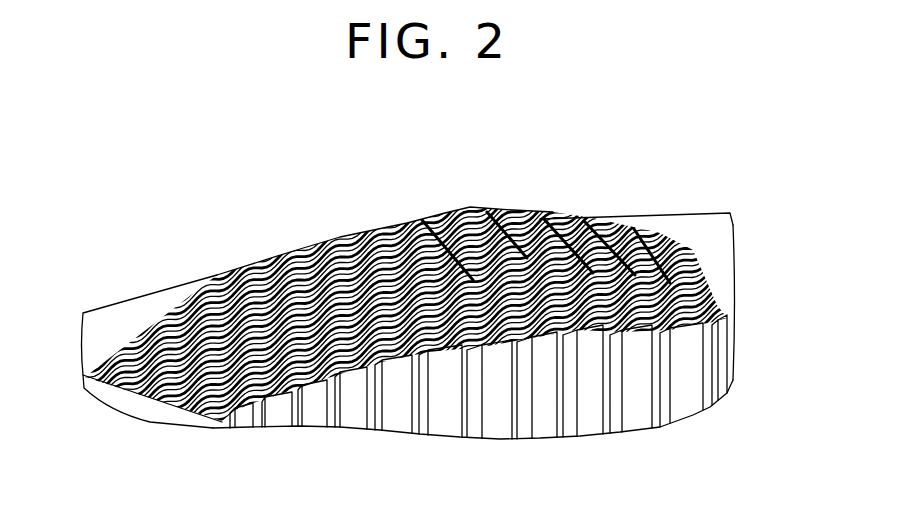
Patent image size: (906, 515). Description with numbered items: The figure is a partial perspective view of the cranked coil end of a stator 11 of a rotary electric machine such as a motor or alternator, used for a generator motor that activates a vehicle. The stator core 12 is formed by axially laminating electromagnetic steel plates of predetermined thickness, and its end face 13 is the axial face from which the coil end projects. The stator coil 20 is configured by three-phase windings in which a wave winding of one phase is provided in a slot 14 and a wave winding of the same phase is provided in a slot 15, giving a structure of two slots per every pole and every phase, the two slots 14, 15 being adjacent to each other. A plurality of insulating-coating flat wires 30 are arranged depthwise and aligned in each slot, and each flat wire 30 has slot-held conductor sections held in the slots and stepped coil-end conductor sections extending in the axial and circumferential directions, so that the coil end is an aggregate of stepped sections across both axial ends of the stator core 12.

The stator 11 is at (709, 201).
The stator core 12 is at (725, 261).
The end face 13 is at (116, 318).
The slot 14 is at (667, 443).
The slot 15 is at (712, 427).
The stator coil 20 is at (477, 203).
The insulating-coating flat wire 30 is at (226, 266).